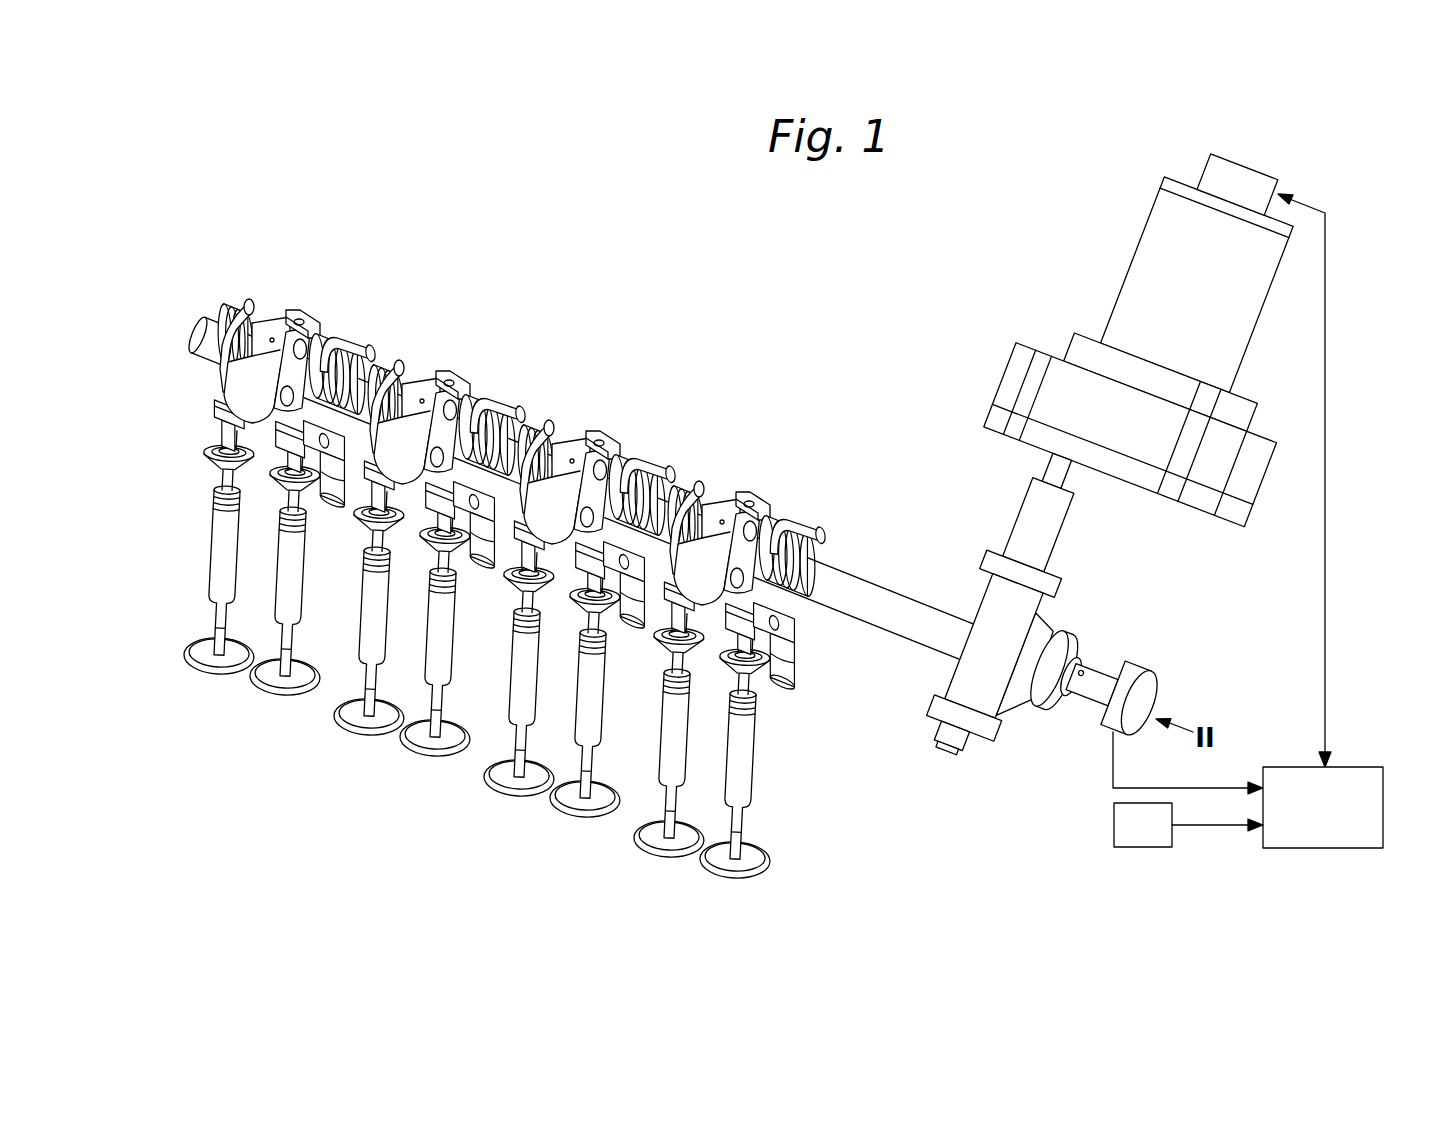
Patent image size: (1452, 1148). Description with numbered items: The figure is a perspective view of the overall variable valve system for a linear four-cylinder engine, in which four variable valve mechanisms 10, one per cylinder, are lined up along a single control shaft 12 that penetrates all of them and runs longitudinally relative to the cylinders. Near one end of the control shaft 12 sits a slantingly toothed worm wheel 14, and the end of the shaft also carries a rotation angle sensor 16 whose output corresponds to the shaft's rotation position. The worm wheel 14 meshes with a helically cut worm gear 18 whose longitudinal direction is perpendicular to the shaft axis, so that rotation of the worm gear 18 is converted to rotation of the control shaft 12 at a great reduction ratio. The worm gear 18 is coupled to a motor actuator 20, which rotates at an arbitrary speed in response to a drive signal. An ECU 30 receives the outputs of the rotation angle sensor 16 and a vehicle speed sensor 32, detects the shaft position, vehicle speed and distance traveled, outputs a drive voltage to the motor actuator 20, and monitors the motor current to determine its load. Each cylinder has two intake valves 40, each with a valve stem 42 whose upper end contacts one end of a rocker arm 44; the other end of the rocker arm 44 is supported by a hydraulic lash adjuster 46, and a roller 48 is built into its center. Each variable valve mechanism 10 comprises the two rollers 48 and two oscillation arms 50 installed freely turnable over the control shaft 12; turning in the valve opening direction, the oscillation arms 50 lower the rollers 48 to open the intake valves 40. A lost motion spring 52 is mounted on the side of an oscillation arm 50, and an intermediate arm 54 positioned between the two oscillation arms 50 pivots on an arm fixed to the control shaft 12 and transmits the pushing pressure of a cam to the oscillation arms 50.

The variable valve mechanism 10 is at (544, 379).
The control shaft 12 is at (889, 590).
The worm wheel 14 is at (1070, 650).
The rotation angle sensor 16 is at (1128, 674).
The worm gear 18 is at (951, 680).
The motor actuator 20 is at (1128, 252).
The ECU 30 is at (1357, 767).
The vehicle speed sensor 32 is at (1114, 823).
The intake valve 40 is at (634, 850).
The valve stem 42 is at (668, 800).
The rocker arm 44 is at (665, 608).
The hydraulic lash adjuster 46 is at (719, 658).
The roller 48 is at (497, 565).
The oscillation arm 50 is at (643, 488).
The lost motion spring 52 is at (688, 492).
The intermediate arm 54 is at (700, 578).